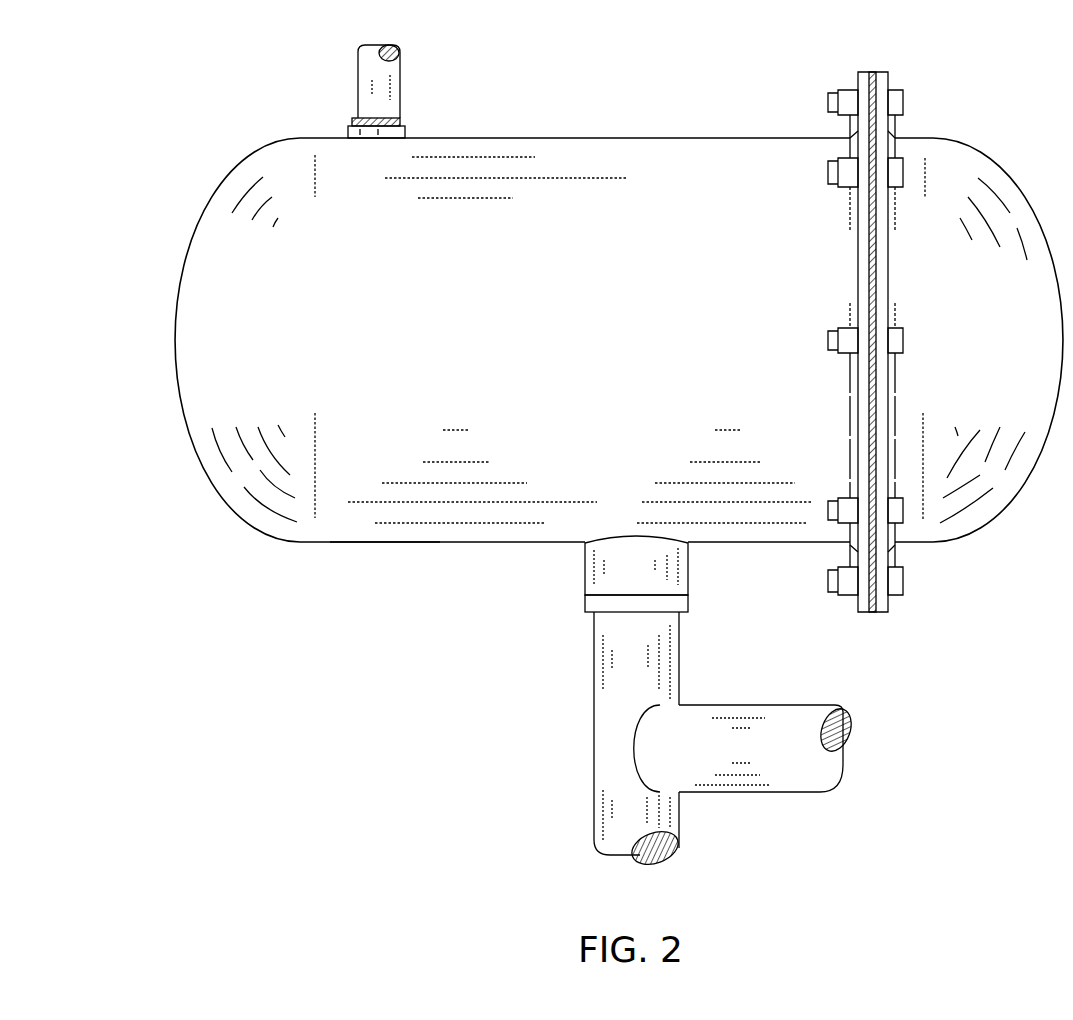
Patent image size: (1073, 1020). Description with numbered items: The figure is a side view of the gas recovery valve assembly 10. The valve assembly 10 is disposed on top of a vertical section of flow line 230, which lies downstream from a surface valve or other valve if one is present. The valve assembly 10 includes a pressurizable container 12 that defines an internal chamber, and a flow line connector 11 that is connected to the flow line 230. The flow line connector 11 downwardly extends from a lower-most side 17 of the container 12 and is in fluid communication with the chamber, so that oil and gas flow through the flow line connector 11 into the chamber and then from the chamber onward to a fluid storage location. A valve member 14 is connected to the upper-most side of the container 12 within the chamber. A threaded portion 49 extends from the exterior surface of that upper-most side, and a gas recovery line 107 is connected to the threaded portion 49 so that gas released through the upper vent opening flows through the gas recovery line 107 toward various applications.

The valve assembly 10 is at (966, 110).
The pressurizable container 12 is at (598, 138).
The lower-most side 17 is at (380, 548).
The flow line connector 11 is at (688, 580).
The flow line 230 is at (592, 676).
The gas recovery line 107 is at (400, 75).
The threaded portion 49 is at (402, 118).
The valve member 14 is at (405, 131).